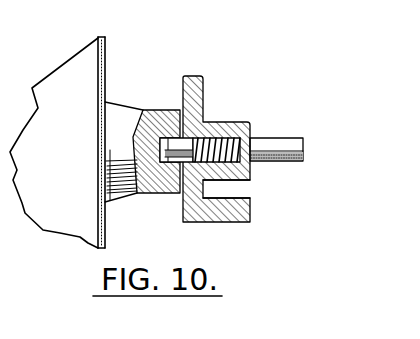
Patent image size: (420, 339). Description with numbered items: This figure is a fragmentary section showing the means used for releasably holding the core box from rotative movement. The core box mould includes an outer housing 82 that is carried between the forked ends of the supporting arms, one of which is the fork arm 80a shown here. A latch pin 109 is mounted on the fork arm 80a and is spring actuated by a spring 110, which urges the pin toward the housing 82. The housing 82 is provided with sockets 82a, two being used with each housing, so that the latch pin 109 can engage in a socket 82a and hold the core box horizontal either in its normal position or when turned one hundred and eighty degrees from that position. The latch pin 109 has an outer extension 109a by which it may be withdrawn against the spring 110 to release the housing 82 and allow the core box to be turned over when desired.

The outer housing 82 is at (93, 70).
The socket 82a is at (133, 195).
The fork arm 80a is at (203, 100).
The latch pin 109 is at (156, 110).
The bolt extension rod 109a is at (278, 143).
The spring 110 is at (224, 163).